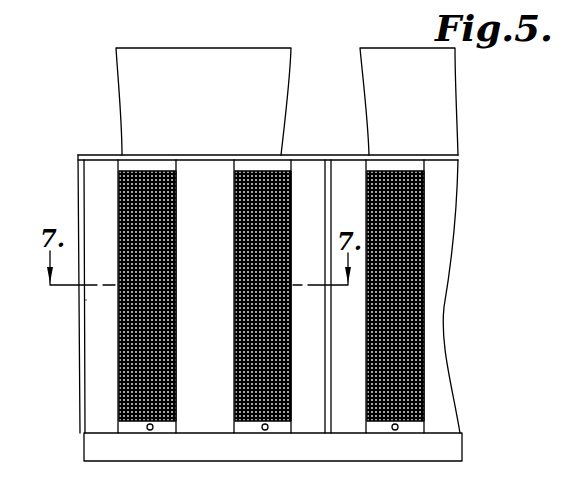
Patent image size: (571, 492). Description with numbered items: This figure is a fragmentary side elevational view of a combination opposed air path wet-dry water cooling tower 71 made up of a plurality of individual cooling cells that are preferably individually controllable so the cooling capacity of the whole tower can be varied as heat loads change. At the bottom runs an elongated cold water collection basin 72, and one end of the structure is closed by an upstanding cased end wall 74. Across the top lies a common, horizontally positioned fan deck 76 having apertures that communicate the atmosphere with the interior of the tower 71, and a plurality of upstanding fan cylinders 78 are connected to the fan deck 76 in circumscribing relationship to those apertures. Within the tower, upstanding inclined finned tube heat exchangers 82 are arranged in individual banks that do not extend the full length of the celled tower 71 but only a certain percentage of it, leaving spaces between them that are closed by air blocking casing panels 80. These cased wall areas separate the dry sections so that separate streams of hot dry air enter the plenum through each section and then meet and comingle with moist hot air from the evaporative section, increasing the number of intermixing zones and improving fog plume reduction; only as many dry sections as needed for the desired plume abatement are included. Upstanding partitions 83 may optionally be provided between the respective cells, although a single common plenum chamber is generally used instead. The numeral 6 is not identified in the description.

The water cooling tower 71 is at (323, 62).
The cold water collection basin 72 is at (212, 445).
The cased end wall 74 is at (78, 178).
The fan deck 76 is at (313, 153).
The fan cylinder 78 is at (118, 92).
The casing panel 80 is at (207, 176).
The finned tube heat exchanger 82 is at (418, 204).
The partition 83 is at (333, 343).
The partial numeral at sheet edge 6 is at (564, 304).